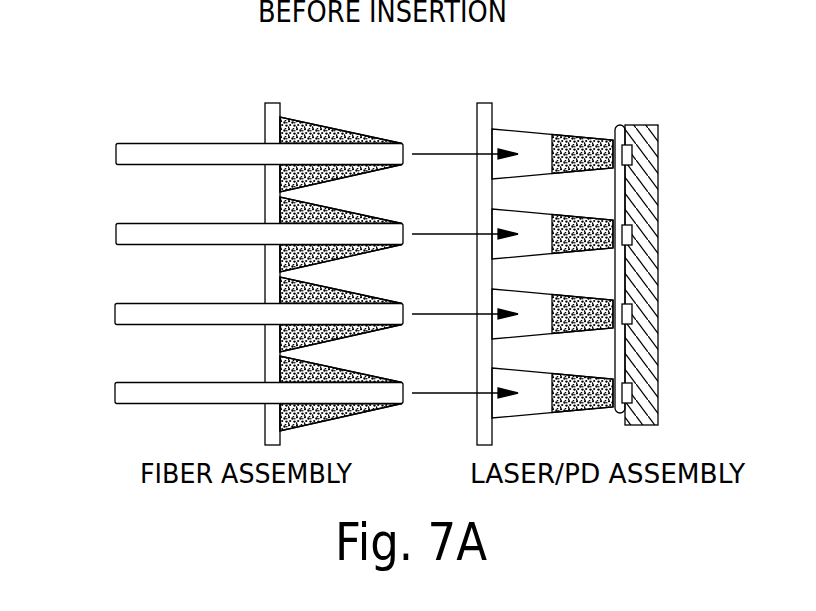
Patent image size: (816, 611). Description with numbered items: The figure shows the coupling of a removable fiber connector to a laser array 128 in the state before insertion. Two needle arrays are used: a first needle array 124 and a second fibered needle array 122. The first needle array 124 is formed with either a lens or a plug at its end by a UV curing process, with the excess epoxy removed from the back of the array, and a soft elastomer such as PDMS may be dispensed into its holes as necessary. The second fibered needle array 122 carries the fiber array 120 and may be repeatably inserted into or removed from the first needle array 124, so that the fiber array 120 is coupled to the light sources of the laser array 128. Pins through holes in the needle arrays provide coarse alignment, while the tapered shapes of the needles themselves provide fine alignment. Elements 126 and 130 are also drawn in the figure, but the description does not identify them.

The fiber array 120 is at (118, 155).
The second fibered needle array 122 is at (377, 140).
The first needle array 124 is at (520, 128).
The stippled filler material 126 is at (307, 123).
The laser array 128 is at (637, 233).
The thin cover strip 130 is at (620, 352).